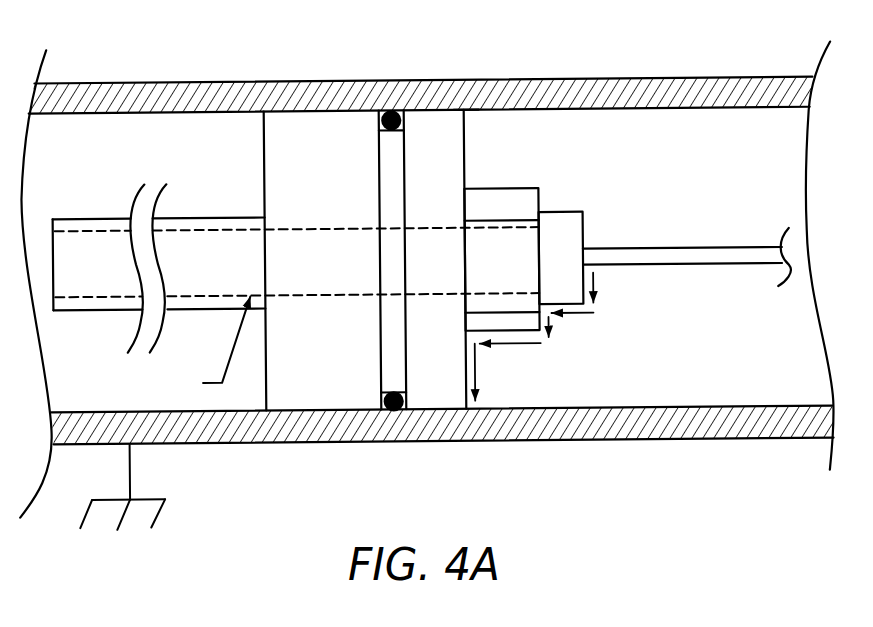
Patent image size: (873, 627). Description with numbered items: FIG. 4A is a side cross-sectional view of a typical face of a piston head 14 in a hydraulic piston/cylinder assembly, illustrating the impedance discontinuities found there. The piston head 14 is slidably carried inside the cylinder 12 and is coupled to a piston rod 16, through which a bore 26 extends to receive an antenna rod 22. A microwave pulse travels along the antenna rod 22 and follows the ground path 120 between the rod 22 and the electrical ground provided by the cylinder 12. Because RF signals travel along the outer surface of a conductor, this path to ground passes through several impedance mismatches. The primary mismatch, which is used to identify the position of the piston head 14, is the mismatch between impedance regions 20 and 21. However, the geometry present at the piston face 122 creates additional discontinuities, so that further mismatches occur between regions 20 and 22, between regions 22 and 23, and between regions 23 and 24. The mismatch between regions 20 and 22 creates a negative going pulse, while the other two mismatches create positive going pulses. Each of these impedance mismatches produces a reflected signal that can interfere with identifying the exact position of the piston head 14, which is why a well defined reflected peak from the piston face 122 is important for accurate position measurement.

The cylinder 12 is at (79, 444).
The piston head 14 is at (304, 134).
The piston rod 16 is at (108, 215).
The bore 26 is at (193, 230).
The piston face 122 is at (488, 208).
The impedance Z4 region (Z3/Z4 mismatch) 24 is at (468, 114).
The impedance Z3 region (Z2/Z3 mismatch) 23 is at (518, 111).
The antenna rod / impedance Z2 region 22 is at (571, 111).
The impedance Z1 region (Z0/Z1 mismatch) 21 is at (684, 111).
The impedance Z0 region 20 is at (608, 294).
The ground path 120 is at (537, 357).